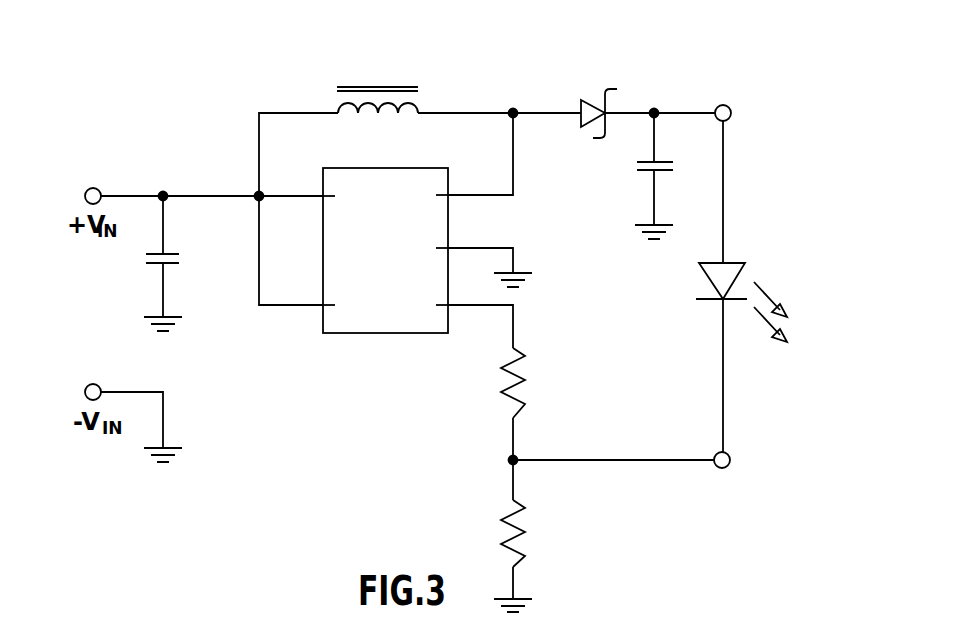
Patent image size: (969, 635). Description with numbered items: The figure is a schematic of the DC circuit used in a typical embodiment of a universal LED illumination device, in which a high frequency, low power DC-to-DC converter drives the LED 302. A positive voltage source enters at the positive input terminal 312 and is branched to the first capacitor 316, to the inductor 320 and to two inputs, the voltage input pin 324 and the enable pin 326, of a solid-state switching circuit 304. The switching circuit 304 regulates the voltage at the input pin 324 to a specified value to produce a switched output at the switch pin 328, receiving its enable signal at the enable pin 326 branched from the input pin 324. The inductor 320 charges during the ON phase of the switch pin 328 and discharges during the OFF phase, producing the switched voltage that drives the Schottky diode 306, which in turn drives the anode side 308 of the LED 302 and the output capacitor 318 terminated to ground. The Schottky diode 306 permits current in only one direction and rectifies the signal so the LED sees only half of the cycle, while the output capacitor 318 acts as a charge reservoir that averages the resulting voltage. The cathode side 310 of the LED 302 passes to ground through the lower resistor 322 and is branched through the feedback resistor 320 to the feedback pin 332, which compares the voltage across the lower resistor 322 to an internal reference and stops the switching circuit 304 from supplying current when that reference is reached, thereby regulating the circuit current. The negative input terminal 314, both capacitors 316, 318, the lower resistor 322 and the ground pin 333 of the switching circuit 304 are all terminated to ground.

The LED 302 is at (742, 262).
The switching circuit 304 is at (380, 333).
The Schottky diode D1 306 is at (590, 100).
The anode side 308 is at (723, 105).
The cathode side 310 is at (731, 463).
The +Vin 312 is at (93, 188).
The -Vin 314 is at (95, 384).
The capacitor C1 316 is at (178, 264).
The capacitor C3 318 is at (638, 162).
The inductor L1 / resistor R3 320 is at (357, 87).
The resistor R4 322 is at (525, 548).
The Vin input 324 is at (346, 183).
The EN input 326 is at (340, 318).
The SW output 328 is at (422, 183).
The FB pin 332 is at (418, 320).
The GND pin 333 is at (434, 238).